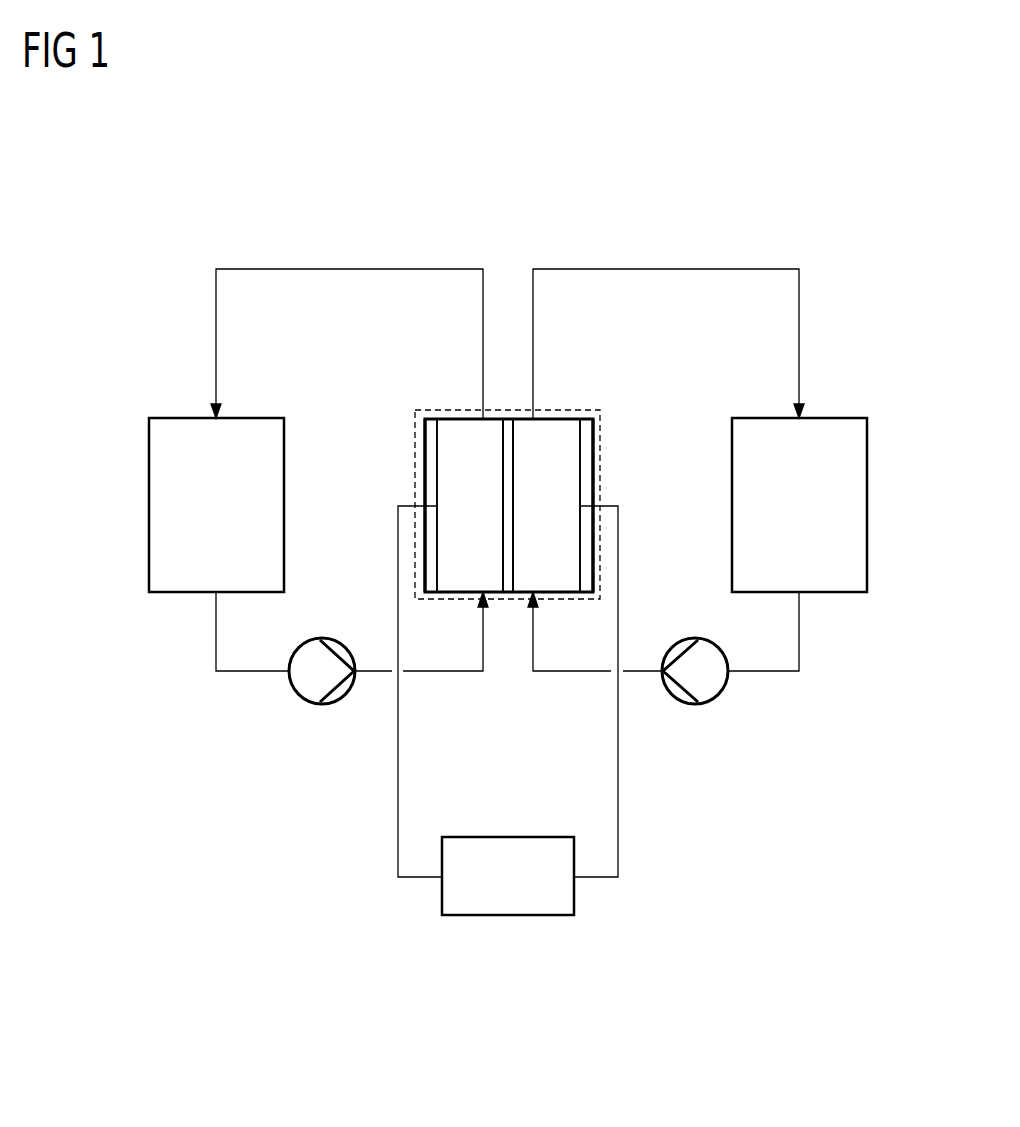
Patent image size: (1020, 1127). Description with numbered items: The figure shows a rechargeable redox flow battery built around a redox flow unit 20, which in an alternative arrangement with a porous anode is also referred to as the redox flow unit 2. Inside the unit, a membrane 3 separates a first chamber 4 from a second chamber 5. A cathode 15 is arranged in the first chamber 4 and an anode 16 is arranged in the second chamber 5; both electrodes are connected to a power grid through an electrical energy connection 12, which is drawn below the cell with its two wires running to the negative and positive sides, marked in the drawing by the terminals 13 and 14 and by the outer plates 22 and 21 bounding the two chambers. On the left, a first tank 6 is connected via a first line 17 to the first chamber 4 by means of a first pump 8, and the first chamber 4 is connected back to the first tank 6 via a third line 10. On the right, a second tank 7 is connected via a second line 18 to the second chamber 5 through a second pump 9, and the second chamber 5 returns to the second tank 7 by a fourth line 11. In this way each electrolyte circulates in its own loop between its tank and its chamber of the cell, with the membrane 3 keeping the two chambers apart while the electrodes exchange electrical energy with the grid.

The redox flow unit 2 is at (600, 548).
The membrane 3 is at (507, 430).
The first chamber 4 is at (456, 430).
The second chamber 5 is at (560, 430).
The first tank 6 is at (148, 503).
The second tank 7 is at (868, 500).
The first pump 8 is at (322, 705).
The second pump 9 is at (695, 705).
The third line 10 is at (287, 268).
The fourth line 11 is at (730, 268).
The electrical energy connection 12 is at (506, 917).
The negative electrode 13 is at (445, 480).
The positive electrode 14 is at (570, 480).
The cathode 15 is at (445, 457).
The anode 16 is at (570, 455).
The first return line 17 is at (256, 672).
The second line 18 is at (765, 672).
The redox flow unit 20 is at (598, 410).
The second end plate 21 is at (583, 427).
The first end plate 22 is at (430, 429).